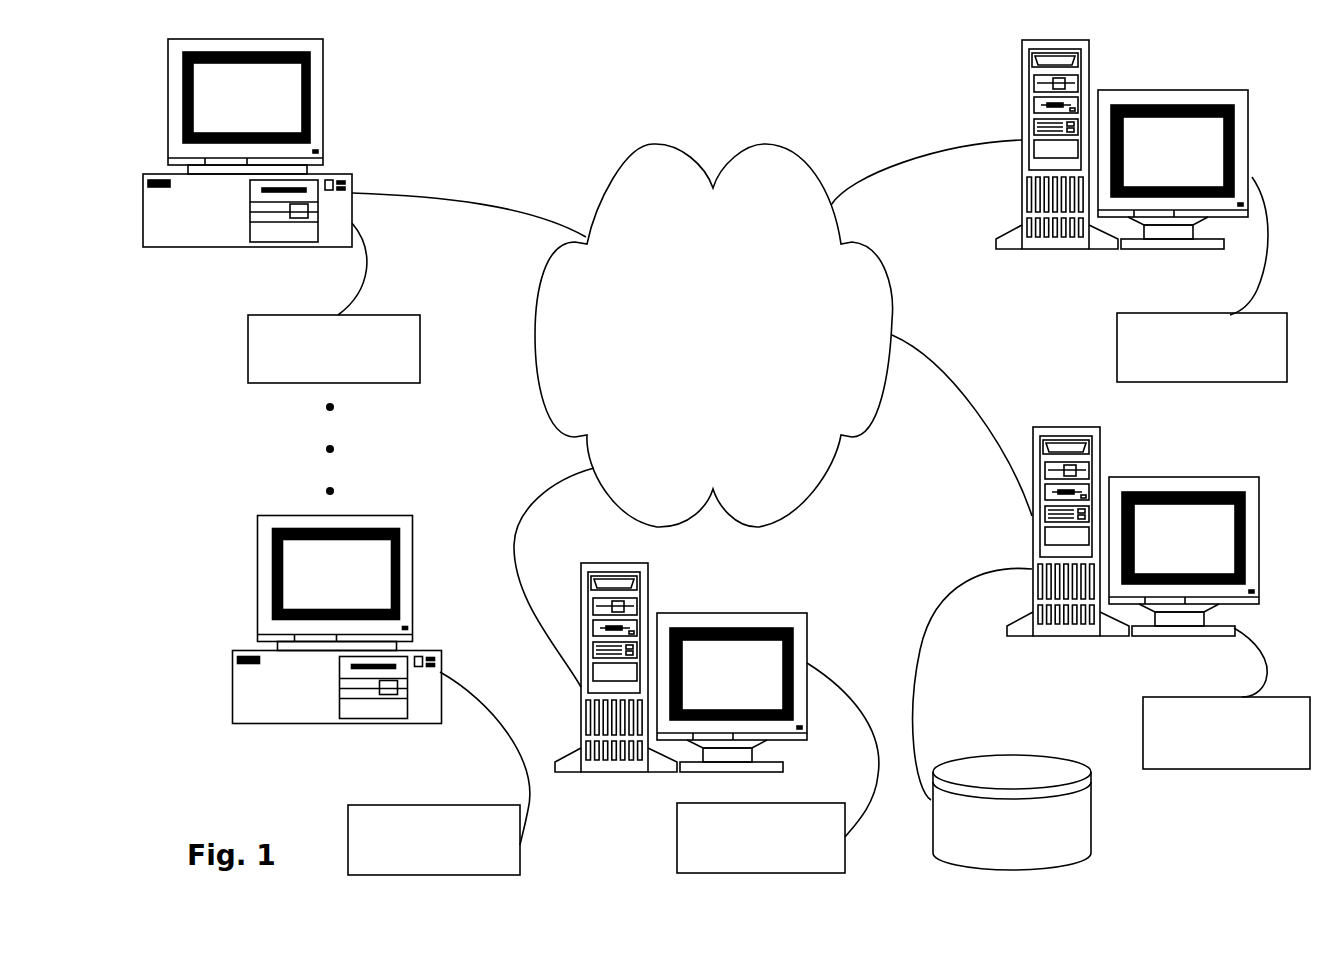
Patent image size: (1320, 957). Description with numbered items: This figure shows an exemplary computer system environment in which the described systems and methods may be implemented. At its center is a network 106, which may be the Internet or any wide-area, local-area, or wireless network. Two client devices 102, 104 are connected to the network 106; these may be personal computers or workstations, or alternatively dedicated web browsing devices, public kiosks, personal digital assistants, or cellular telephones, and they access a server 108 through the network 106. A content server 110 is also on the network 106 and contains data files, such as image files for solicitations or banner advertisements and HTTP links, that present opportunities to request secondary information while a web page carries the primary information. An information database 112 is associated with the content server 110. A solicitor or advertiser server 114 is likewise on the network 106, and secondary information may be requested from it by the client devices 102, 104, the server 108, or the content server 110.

The client device 102 is at (219, 168).
The client device 104 is at (307, 645).
The network 106 is at (714, 312).
The server 108 is at (1094, 144).
The content server 110 is at (1133, 502).
The information database 112 is at (1068, 812).
The solicitor or advertiser server 114 is at (681, 641).